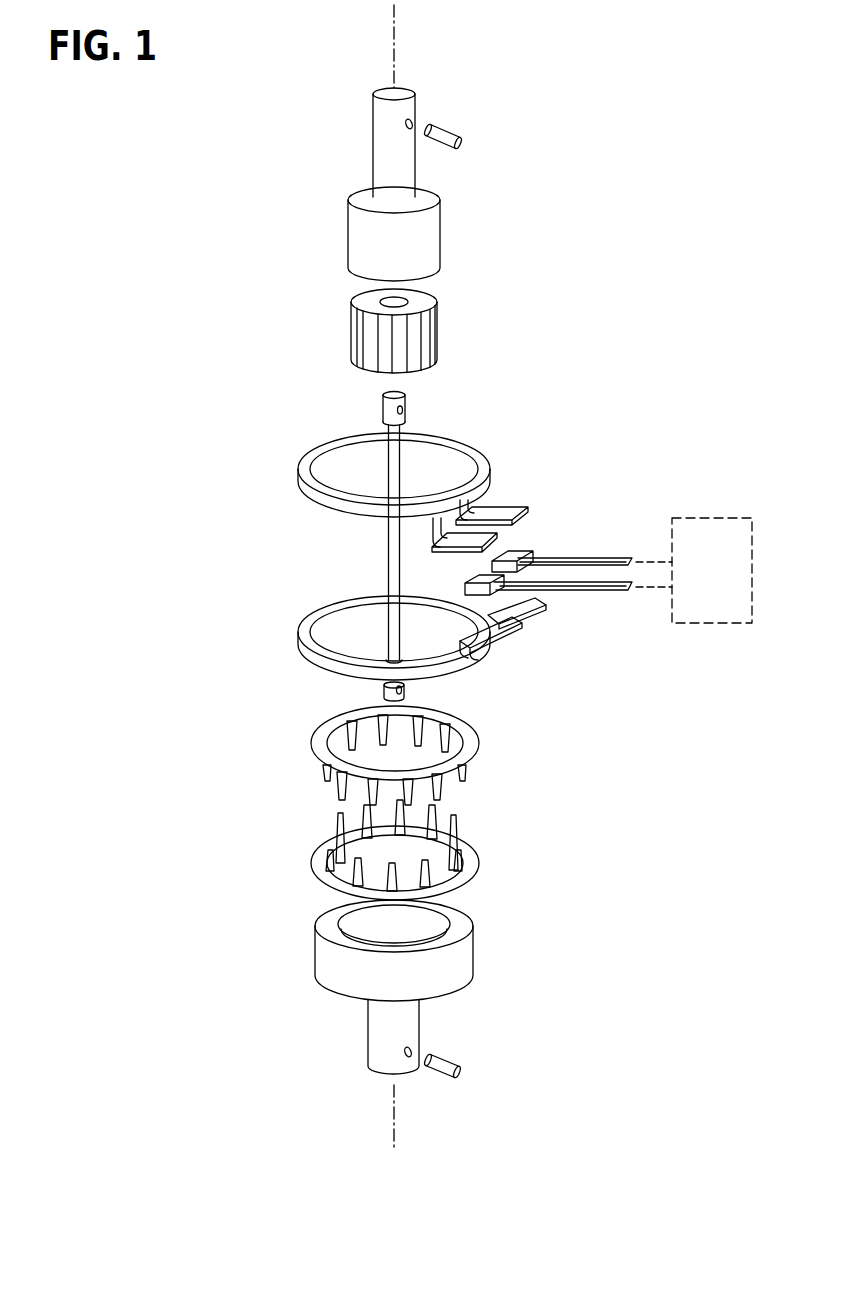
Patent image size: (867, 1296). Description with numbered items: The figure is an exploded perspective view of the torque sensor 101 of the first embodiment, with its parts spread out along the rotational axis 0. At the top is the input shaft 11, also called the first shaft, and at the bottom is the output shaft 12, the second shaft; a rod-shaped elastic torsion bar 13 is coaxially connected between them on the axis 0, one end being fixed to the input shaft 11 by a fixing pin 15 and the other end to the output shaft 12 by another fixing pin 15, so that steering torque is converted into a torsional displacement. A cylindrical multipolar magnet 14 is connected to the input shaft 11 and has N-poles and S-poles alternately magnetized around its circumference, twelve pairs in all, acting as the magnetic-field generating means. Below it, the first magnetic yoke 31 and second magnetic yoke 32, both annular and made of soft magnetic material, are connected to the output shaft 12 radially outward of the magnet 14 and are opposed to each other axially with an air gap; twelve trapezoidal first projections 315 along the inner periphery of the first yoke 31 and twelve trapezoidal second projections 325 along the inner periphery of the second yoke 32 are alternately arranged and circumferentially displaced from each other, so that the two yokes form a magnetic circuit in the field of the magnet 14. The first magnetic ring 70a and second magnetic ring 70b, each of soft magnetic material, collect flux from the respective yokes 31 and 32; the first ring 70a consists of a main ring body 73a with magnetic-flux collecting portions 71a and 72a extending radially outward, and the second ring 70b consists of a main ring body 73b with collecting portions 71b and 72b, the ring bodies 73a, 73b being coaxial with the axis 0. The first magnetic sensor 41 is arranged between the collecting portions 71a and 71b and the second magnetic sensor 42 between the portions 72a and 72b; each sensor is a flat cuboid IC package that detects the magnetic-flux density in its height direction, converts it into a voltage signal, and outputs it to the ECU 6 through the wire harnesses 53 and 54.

The rotational axis 0 is at (397, 38).
The torque sensor 101 is at (286, 125).
The input shaft 11 is at (403, 168).
The output shaft 12 is at (401, 1023).
The torsion bar 13 is at (388, 549).
The multipolar magnet 14 is at (440, 352).
The fixing pin 15 is at (450, 130).
The first magnetic yoke 31 is at (368, 759).
The first projections 315 is at (340, 786).
The second magnetic yoke 32 is at (368, 859).
The second projections 325 is at (340, 863).
The first magnetic sensor 41 is at (582, 533).
The second magnetic sensor 42 is at (541, 600).
The wire harness 53 is at (606, 557).
The wire harness 54 is at (606, 590).
The ECU 6 is at (712, 515).
The first magnetic ring 70a is at (395, 473).
The second magnetic ring 70b is at (402, 632).
The magnetic-flux collecting portion 71a is at (506, 507).
The magnetic-flux collecting portion 71b is at (528, 607).
The magnetic-flux collecting portion 72a is at (470, 536).
The magnetic-flux collecting portion 72b is at (508, 640).
The main ring body 73a is at (472, 452).
The main ring body 73b is at (310, 660).